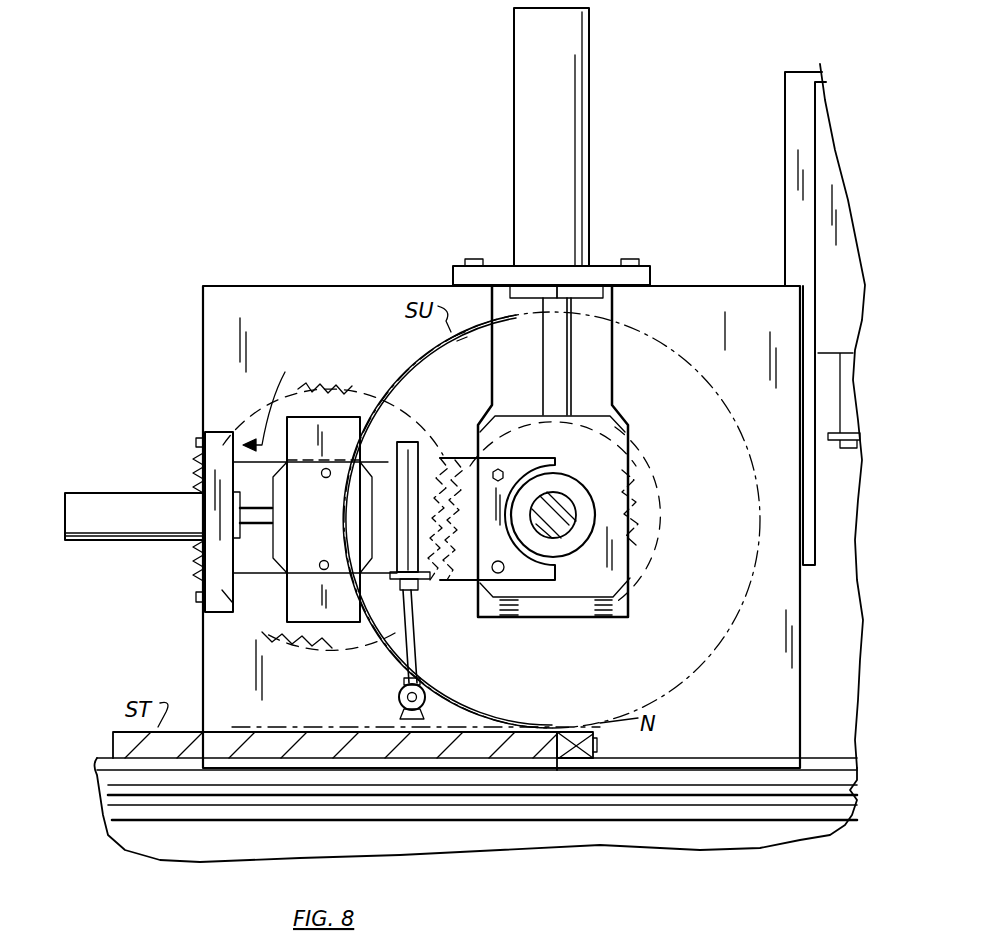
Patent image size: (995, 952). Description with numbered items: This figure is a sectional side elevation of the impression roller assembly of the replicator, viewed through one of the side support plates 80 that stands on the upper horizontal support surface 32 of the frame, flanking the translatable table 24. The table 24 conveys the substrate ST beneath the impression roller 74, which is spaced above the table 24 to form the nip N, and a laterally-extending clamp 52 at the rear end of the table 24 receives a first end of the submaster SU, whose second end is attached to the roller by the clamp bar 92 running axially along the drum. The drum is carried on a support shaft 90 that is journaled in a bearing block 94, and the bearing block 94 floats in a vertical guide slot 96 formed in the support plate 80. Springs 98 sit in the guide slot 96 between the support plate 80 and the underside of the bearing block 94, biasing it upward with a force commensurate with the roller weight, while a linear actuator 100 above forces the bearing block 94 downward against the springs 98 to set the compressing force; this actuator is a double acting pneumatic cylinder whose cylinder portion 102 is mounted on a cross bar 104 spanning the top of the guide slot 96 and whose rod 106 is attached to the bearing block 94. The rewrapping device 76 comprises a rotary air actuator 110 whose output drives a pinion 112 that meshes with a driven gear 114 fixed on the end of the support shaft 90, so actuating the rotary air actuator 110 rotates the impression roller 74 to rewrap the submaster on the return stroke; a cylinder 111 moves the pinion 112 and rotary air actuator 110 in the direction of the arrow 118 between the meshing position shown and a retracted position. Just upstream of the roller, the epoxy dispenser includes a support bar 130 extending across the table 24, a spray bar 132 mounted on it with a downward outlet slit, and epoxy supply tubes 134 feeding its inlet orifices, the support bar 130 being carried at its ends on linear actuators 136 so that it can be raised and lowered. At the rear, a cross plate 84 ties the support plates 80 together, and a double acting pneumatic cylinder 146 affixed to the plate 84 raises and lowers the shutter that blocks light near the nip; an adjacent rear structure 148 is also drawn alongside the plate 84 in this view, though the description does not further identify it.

The translatable table 24 is at (104, 745).
The upper horizontal support surface 32 is at (832, 770).
The laterally-extending clamp 52 is at (597, 742).
The impression roller 74 is at (708, 678).
The rewrapping device 76 is at (104, 486).
The side support plate 80 is at (322, 244).
The rear cross plate 84 is at (816, 531).
The support shaft 90 is at (578, 515).
The clamp bar 92 is at (560, 309).
The bearing block 94 is at (612, 557).
The guide slot 96 is at (606, 372).
The springs 98 is at (600, 602).
The linear actuator 100 is at (598, 28).
The cylinder portion 102 is at (575, 78).
The cross bar 104 is at (651, 266).
The rod 106 is at (565, 343).
The rotary air actuator 110 is at (322, 590).
The cylinder 111 is at (106, 533).
The pinion 112 is at (341, 388).
The driven gear 114 is at (660, 497).
The arrow 118 is at (275, 403).
The support bar 130 is at (399, 697).
The spray bar 132 is at (440, 717).
The epoxy supply tube 134 is at (392, 665).
The linear actuator 136 is at (413, 440).
The double acting pneumatic cylinder 146 is at (845, 391).
The side plate 148 is at (822, 126).